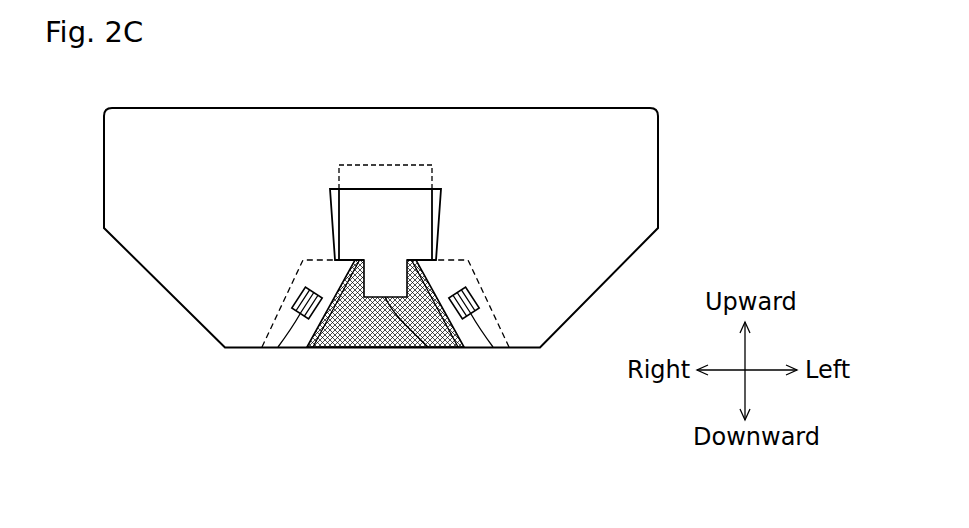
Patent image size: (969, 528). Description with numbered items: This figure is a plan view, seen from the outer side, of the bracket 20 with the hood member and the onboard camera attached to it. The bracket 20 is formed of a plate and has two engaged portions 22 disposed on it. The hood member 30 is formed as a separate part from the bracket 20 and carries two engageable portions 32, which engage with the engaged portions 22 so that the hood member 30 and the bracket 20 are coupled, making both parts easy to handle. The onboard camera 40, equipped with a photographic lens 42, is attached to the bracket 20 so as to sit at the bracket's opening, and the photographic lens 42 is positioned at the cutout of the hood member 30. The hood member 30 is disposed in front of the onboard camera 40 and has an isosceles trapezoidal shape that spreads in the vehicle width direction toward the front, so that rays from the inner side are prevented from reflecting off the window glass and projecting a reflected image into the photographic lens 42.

The bracket 20 is at (386, 112).
The engaged portions 22 is at (294, 293).
The hood member 30 is at (370, 337).
The engageable portions 32 is at (278, 348).
The onboard camera 40 is at (422, 229).
The photographic lens 42 is at (428, 347).